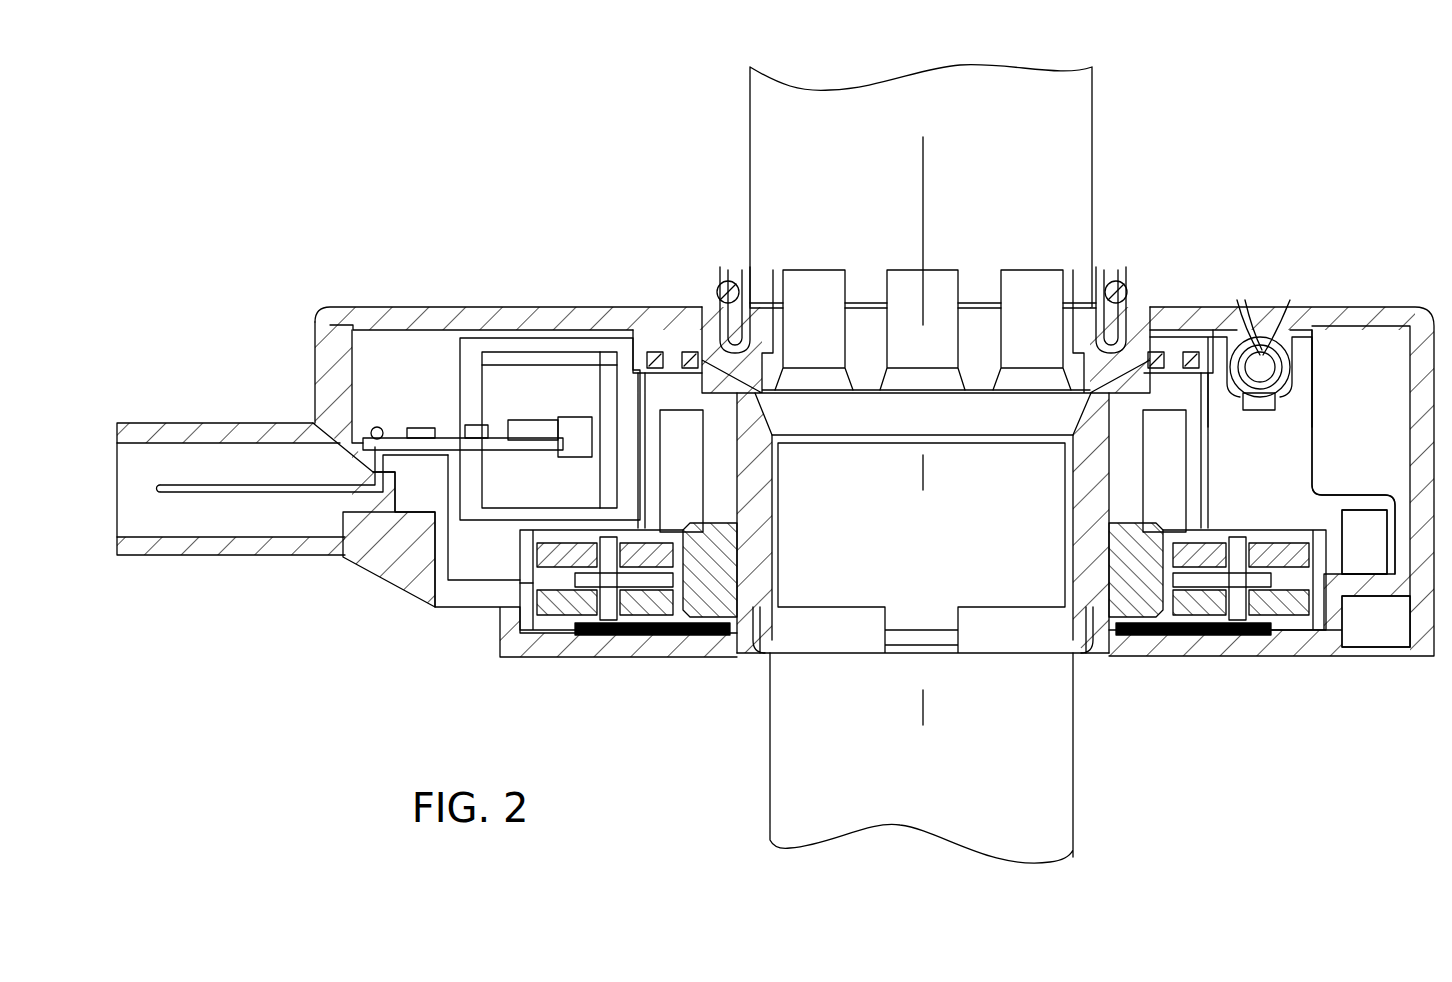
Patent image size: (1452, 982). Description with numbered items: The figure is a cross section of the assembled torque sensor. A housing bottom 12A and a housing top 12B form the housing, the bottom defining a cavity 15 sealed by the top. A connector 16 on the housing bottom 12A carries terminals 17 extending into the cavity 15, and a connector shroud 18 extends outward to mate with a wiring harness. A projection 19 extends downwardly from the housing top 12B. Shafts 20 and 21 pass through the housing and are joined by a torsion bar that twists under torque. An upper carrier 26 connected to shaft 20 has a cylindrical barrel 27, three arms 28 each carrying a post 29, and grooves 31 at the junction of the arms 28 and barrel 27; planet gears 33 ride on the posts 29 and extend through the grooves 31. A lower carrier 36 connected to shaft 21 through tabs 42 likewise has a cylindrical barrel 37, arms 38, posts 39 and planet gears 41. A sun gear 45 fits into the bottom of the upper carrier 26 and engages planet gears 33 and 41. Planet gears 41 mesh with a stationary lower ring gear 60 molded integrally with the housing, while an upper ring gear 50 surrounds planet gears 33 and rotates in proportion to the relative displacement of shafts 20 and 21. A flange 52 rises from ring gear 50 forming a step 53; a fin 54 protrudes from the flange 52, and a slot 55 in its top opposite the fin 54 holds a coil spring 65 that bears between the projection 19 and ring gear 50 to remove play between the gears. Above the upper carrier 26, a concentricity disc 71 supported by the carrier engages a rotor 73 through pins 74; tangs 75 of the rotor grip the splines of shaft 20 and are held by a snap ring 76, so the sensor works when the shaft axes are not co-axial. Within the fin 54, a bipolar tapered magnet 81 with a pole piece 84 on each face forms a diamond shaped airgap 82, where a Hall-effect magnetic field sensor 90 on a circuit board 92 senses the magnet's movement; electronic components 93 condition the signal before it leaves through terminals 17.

The housing bottom 12A is at (315, 395).
The housing top 12B is at (462, 306).
The cavity 15 is at (1365, 325).
The connector 16 is at (156, 574).
The terminals 17 is at (230, 493).
The connector shroud 18 is at (250, 556).
The projection 19 is at (1258, 355).
The shaft 20 is at (750, 97).
The shaft 21 is at (1073, 840).
The upper carrier 26 is at (752, 470).
The cylindrical barrel 27 is at (742, 500).
The arms 28 is at (520, 583).
The post 29 is at (1230, 545).
The grooves 31 is at (740, 530).
The planet gears 33 is at (1283, 543).
The lower carrier 36 is at (1075, 478).
The cylindrical barrel 37 is at (1080, 500).
The arms 38 is at (1255, 636).
The post 39 is at (1215, 615).
The planet gears 41 is at (1300, 612).
The tabs 42 is at (1050, 660).
The sun gear 45 is at (735, 577).
The upper ring gear 50 is at (460, 560).
The flange 52 is at (1300, 415).
The step 53 is at (1355, 518).
The fin 54 is at (540, 338).
The slot 55 is at (1287, 366).
The lower ring gear 60 is at (515, 642).
The coil spring 65 is at (1282, 340).
The concentricity disc 71 is at (648, 330).
The rotor 73 is at (712, 335).
The pins 74 is at (660, 352).
The tangs 75 is at (818, 270).
The snap ring 76 is at (1122, 282).
The bipolar tapered magnet 81 is at (512, 493).
The diamond shaped airgap 82 is at (570, 418).
The pole piece 84 is at (553, 365).
The magnetic field sensor 90 is at (530, 420).
The circuit board 92 is at (381, 427).
The electronic components 93 is at (426, 428).